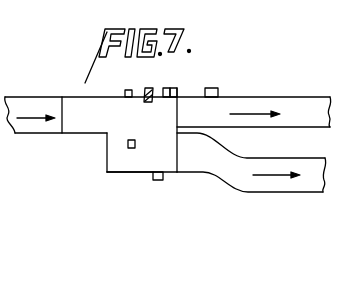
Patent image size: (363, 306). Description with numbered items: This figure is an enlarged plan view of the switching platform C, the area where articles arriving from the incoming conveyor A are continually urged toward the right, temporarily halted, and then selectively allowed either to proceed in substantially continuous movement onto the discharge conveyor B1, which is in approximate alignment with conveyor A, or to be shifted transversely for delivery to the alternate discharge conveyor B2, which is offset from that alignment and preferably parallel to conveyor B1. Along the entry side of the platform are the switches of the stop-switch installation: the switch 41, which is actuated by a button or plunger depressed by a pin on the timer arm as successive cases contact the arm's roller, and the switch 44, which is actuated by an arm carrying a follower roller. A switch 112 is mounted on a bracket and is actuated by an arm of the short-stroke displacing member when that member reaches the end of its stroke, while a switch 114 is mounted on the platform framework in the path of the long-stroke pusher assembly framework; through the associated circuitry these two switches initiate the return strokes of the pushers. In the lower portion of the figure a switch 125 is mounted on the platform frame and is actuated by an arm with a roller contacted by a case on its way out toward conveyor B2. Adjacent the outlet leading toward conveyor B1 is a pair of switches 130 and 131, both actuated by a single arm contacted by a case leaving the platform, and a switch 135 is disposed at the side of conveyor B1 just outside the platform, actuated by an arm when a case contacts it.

The conveyor A is at (23, 108).
The discharge conveyor B1 is at (264, 98).
The discharge conveyor B2 is at (262, 188).
The switching platform C is at (125, 162).
The switch 41 is at (145, 88).
The switch 44 is at (146, 105).
The switch 112 is at (125, 92).
The switch 114 is at (128, 147).
The switch 125 is at (155, 181).
The switch 130 is at (164, 88).
The switch 131 is at (178, 89).
The switch 135 is at (217, 88).